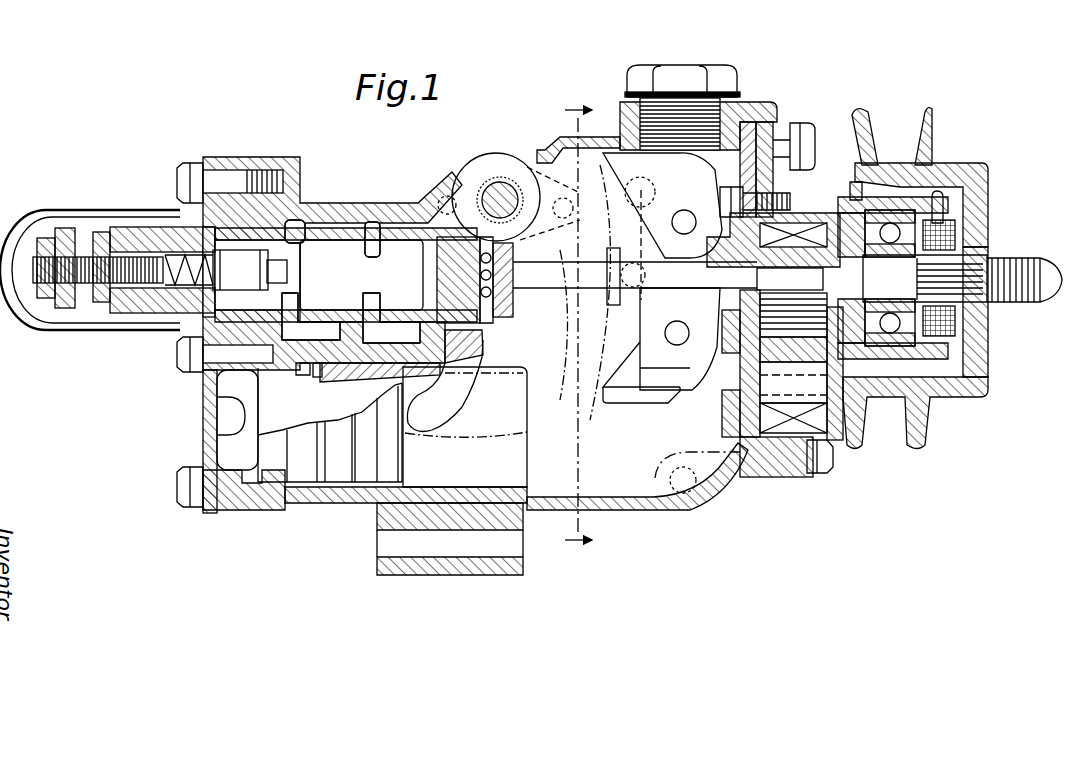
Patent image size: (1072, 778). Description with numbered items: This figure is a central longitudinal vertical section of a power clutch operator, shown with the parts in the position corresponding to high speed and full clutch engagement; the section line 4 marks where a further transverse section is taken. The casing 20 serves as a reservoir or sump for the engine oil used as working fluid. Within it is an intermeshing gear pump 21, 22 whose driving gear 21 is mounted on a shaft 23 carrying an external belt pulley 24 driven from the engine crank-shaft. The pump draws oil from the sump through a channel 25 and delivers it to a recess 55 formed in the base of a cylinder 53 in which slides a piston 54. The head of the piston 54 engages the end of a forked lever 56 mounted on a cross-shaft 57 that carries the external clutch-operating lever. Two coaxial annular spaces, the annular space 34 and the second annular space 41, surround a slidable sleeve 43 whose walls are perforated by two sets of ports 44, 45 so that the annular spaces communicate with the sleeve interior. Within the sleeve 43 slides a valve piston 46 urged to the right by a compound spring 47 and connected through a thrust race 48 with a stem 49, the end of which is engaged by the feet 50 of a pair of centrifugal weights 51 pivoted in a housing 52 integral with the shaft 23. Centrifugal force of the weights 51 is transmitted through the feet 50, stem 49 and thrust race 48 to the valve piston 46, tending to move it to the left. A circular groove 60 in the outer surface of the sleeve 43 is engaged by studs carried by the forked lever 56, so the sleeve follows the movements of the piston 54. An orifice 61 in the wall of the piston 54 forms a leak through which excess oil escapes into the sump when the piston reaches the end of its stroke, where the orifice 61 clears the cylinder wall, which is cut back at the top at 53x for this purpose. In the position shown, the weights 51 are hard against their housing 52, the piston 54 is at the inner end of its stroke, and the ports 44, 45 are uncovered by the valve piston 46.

The section line 4- 4 is at (578, 327).
The casing 20 is at (620, 507).
The driving gear 21 is at (825, 220).
The gear pump gear 22 is at (832, 458).
The shaft 23 is at (885, 273).
The belt pulley 24 is at (922, 443).
The channel 25 is at (682, 483).
The annular space 34 is at (298, 360).
The second annular space 41 is at (355, 362).
The slidable sleeve 43 is at (327, 227).
The ports 44 is at (292, 240).
The ports 45 is at (375, 250).
The valve piston 46 is at (360, 270).
The compound spring 47 is at (183, 213).
The thrust race 48 is at (488, 300).
The stem 49 is at (568, 273).
The feet 50 is at (640, 272).
The centrifugal weights 51 is at (622, 403).
The housing 52 is at (688, 353).
The cylinder 53 is at (237, 452).
The cut-back portion of cylinder 53x is at (455, 393).
The piston 54 is at (332, 465).
The recess 55 is at (228, 417).
The forked lever 56 is at (410, 412).
The cross-shaft 57 is at (500, 195).
The circular groove 60 is at (482, 233).
The orifice 61 is at (317, 370).